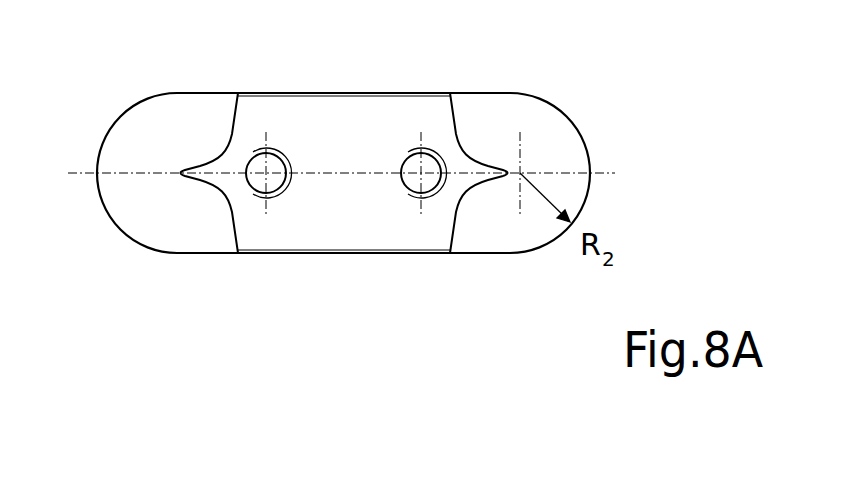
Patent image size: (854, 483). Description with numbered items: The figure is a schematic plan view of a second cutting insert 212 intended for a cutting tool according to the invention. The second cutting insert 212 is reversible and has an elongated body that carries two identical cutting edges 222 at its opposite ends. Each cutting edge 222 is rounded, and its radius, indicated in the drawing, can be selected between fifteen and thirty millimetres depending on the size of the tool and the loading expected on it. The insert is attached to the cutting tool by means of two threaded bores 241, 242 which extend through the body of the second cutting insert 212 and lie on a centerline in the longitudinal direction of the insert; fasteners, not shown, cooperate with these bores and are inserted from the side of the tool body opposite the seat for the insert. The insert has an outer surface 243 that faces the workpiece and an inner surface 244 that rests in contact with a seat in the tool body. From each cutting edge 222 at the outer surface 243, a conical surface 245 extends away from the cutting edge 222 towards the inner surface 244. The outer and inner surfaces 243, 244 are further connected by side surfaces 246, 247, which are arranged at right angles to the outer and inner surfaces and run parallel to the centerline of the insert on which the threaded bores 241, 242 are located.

The second cutting insert 212 is at (362, 129).
The cutting edge 222 is at (130, 110).
The threaded bore 241 is at (402, 197).
The threaded bore 242 is at (287, 193).
The outer surface 243 is at (200, 265).
The inner surface 244 is at (297, 112).
The conical surface 245 is at (132, 222).
The side surface 246 is at (437, 255).
The side surface 247 is at (437, 92).